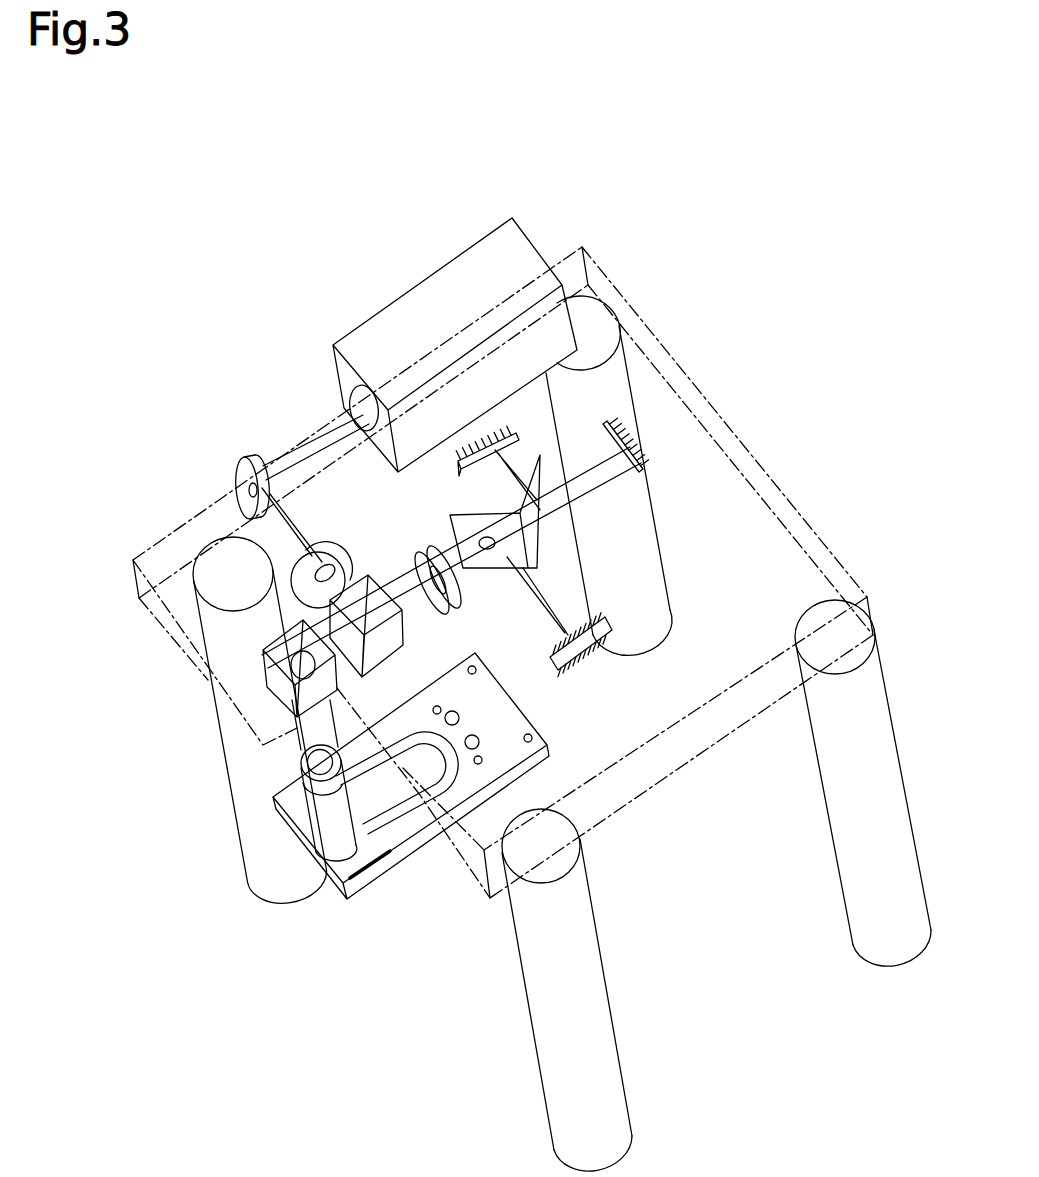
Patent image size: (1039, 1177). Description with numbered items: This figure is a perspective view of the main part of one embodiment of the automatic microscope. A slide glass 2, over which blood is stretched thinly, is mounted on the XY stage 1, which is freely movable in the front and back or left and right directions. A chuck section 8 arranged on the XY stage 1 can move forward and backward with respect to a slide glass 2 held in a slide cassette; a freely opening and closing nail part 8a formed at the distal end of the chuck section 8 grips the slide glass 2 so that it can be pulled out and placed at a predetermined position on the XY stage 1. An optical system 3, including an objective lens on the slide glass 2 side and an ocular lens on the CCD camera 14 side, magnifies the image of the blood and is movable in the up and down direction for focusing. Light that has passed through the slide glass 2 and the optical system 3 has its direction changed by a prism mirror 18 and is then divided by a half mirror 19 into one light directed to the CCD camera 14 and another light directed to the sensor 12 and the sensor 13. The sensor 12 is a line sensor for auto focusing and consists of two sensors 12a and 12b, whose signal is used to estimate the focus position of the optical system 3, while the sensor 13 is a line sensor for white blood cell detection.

The XY stage 1 is at (800, 513).
The slide glass 2 is at (313, 822).
The optical system 3 is at (322, 873).
The chuck section 8 is at (452, 805).
The nail part 8a is at (362, 885).
The sensor for auto focusing 12 is at (667, 365).
The sensor 12a is at (500, 430).
The sensor 12b is at (647, 467).
The sensor for white blood cell detection 13 is at (565, 673).
The CCD camera 14 is at (428, 302).
The prism mirror 18 is at (262, 692).
The half mirror 19 is at (392, 642).